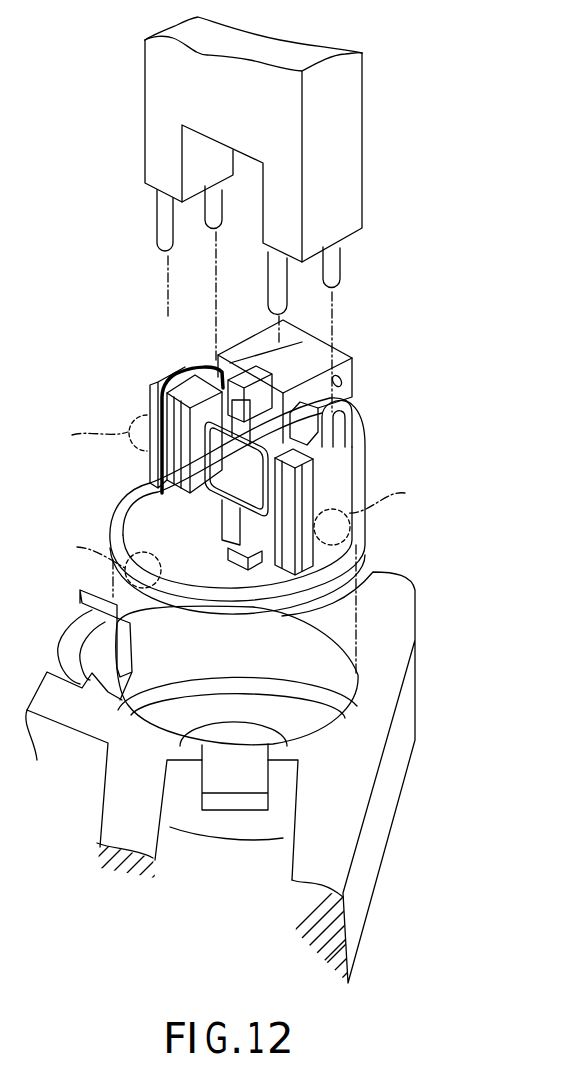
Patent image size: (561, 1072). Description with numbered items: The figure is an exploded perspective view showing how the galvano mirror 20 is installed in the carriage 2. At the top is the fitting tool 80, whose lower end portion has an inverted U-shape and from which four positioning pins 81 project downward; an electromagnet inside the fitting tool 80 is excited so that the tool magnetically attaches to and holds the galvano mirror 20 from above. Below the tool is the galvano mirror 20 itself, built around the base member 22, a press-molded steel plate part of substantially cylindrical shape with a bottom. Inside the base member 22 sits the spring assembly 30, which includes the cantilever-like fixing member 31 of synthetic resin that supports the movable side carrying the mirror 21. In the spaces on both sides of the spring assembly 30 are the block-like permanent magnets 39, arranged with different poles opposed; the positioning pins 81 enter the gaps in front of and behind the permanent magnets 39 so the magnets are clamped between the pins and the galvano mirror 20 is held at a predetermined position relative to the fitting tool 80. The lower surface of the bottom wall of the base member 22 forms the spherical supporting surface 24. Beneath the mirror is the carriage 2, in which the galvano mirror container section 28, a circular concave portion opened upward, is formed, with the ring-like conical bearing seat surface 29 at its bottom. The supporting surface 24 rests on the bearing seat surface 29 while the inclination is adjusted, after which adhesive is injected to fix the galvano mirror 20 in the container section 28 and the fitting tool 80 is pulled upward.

The carriage 2 is at (247, 813).
The galvano mirror 20 is at (272, 497).
The mirror 21 is at (225, 462).
The base member 22 is at (360, 533).
The supporting surface 24 is at (252, 608).
The galvano mirror container section 28 is at (265, 652).
The bearing seat surface 29 is at (172, 723).
The spring assembly 30 is at (329, 382).
The fixing member 31 is at (342, 397).
The permanent magnets 39 is at (177, 370).
The fitting tool 80 is at (365, 123).
The positioning pins 81 is at (210, 212).